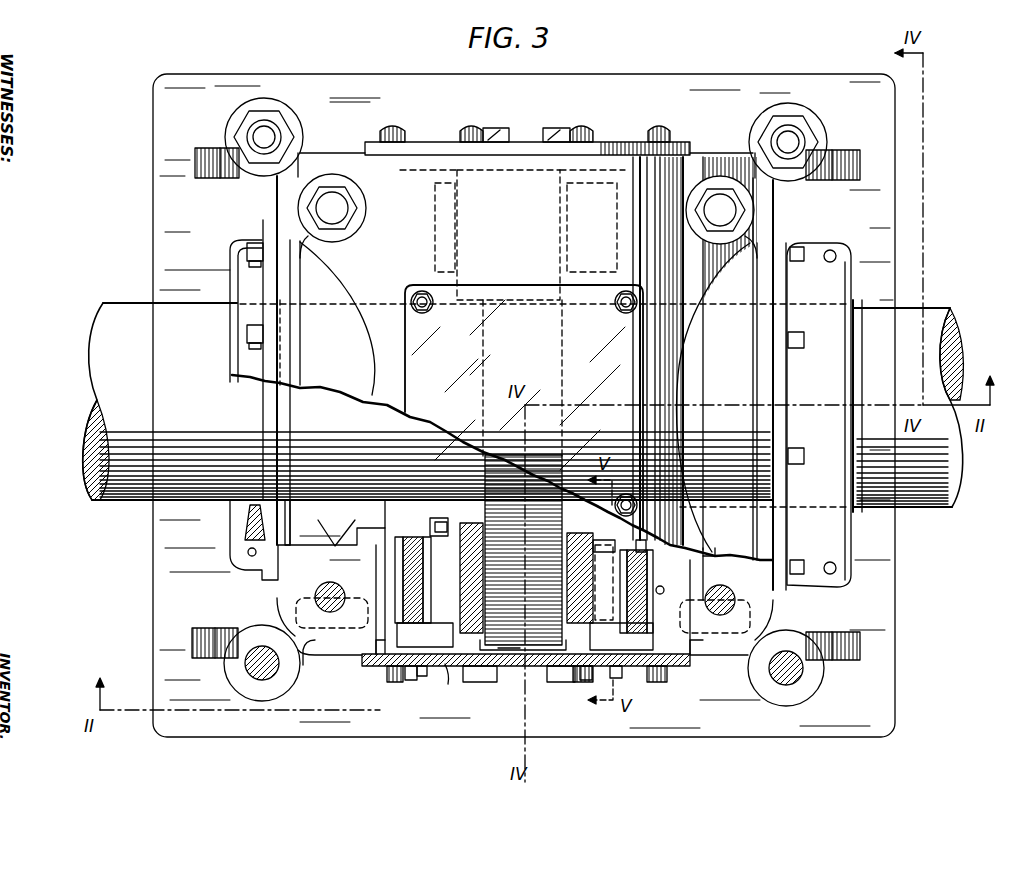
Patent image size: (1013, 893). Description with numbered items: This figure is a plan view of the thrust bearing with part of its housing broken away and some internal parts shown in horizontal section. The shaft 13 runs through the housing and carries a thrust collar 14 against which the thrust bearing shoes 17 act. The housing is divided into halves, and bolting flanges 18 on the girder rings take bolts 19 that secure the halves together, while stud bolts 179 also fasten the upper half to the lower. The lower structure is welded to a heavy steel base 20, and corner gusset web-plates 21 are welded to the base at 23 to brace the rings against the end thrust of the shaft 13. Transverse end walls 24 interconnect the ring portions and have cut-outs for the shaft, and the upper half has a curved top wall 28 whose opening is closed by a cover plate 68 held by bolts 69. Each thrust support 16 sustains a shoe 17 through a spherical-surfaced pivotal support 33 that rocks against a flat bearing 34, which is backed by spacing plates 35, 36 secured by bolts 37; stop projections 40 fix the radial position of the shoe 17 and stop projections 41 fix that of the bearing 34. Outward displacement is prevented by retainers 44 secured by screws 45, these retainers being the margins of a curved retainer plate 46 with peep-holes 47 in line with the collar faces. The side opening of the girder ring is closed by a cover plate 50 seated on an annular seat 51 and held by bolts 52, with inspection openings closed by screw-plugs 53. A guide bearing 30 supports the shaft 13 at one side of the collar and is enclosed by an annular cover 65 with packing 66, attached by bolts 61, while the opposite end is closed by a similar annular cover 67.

The shaft 13 is at (120, 392).
The thrust collar 14 is at (538, 478).
The thrust support 16 is at (370, 540).
The thrust bearing shoe 17 is at (450, 172).
The bolting flange 18 is at (270, 108).
The bolt 19 is at (262, 135).
The base 20 is at (170, 214).
The corner gusset web-plate 21 is at (212, 160).
The weld 23 is at (220, 178).
The end wall 24 is at (292, 360).
The top wall 28 is at (360, 318).
The guide bearing 30 is at (712, 556).
The spherical-surfaced pivotal support 33 is at (434, 226).
The flat bearing 34 is at (403, 566).
The spacing plate 35 is at (396, 581).
The spacing plate 36 is at (424, 594).
The bolt 37 is at (398, 540).
The stop projection 40 is at (428, 522).
The stop projection 41 is at (648, 548).
The retainer 44 is at (412, 682).
The screw 45 is at (521, 678).
The retainer plate 46 is at (450, 684).
The peep-hole 47 is at (535, 668).
The cover plate 50 is at (688, 142).
The annular seat 51 is at (376, 646).
The bolt 52 is at (470, 128).
The screw-plug 53 is at (496, 128).
The bolt 61 is at (256, 240).
The annular cover 65 is at (825, 390).
The packing 66 is at (248, 522).
The annular cover 67 is at (246, 268).
The cover plate 68 is at (520, 290).
The bolt 69 is at (428, 312).
The bracket bolt 179 is at (340, 205).